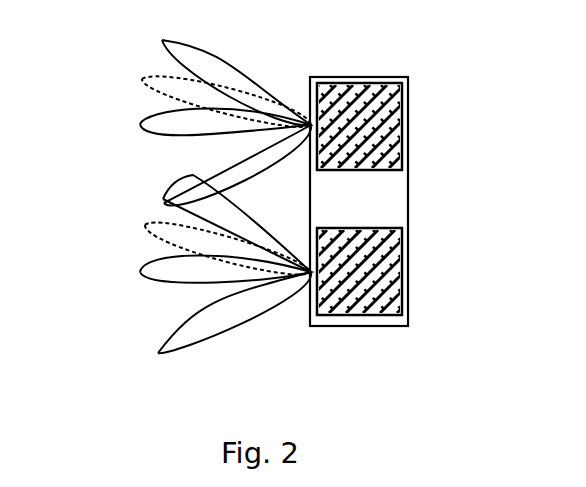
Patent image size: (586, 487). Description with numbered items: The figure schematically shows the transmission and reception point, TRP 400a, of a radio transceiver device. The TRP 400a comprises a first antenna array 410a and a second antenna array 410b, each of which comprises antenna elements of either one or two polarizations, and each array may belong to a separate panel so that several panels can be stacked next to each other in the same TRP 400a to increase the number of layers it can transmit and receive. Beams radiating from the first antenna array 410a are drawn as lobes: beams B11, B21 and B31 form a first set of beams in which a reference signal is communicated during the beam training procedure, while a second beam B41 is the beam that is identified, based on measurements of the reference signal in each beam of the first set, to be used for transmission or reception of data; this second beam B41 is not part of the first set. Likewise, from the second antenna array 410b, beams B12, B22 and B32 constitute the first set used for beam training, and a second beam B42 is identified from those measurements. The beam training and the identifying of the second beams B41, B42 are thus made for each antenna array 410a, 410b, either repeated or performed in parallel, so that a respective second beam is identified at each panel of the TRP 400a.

The TRP 400a is at (360, 326).
The first antenna array 410a is at (408, 122).
The second antenna array 410b is at (408, 262).
The beam B11 is at (162, 40).
The second beam B41 is at (142, 79).
The beam B21 is at (140, 124).
The beam B31 is at (193, 175).
The beam B12 is at (163, 199).
The second beam B42 is at (145, 225).
The beam B22 is at (140, 272).
The beam B32 is at (158, 353).